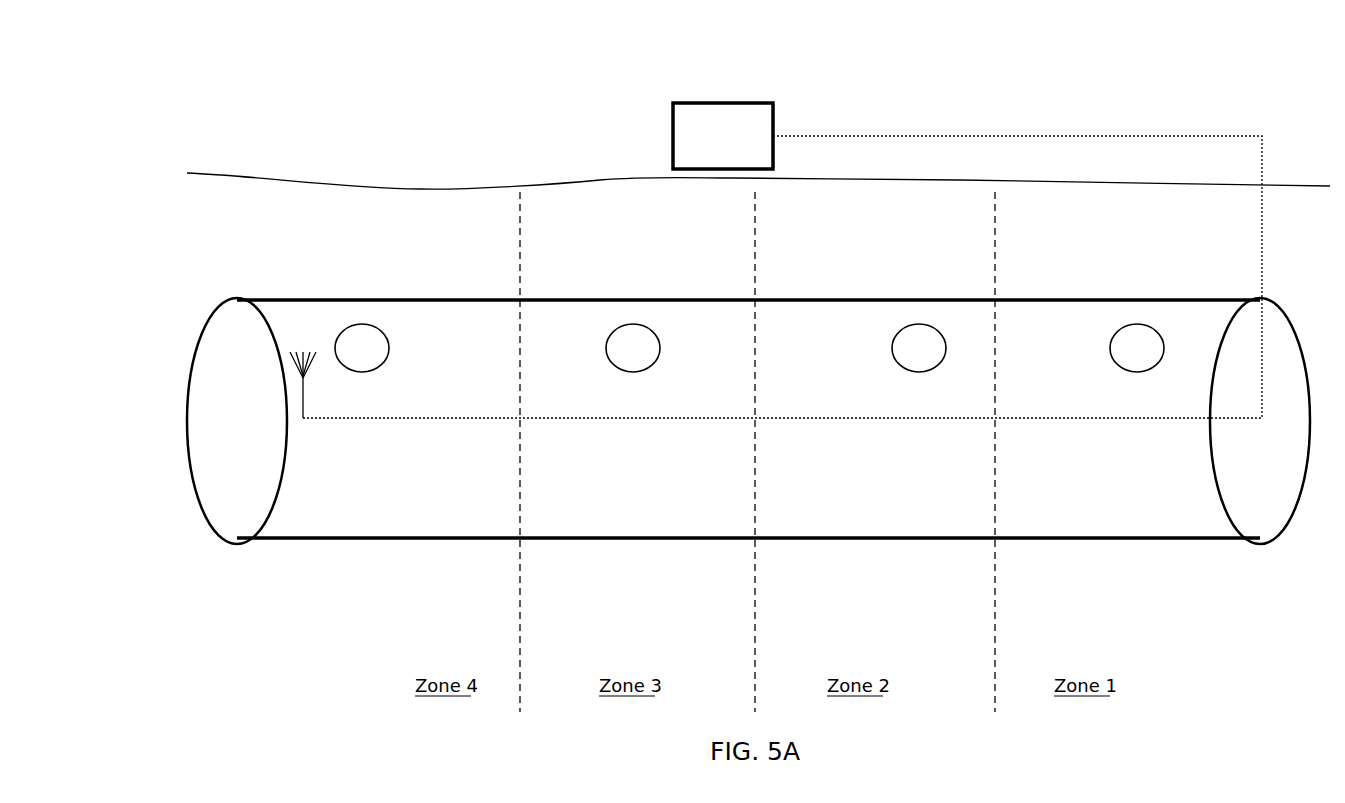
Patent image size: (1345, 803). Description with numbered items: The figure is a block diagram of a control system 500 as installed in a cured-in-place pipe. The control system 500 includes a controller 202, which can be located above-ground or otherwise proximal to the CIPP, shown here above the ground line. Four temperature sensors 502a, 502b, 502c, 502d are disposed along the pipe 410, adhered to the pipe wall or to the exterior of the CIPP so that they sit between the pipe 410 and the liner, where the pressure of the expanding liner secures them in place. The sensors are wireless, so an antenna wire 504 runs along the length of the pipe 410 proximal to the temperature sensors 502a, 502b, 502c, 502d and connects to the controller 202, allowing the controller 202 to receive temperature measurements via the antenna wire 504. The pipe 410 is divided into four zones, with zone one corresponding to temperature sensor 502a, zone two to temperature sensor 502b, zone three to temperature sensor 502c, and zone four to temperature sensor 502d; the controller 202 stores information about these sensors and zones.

The control system 500 is at (205, 108).
The controller 202 is at (740, 143).
The pipe 410 is at (326, 524).
The antenna wire 504 is at (463, 421).
The temperature sensor 502a is at (1137, 325).
The temperature sensor 502b is at (919, 325).
The temperature sensor 502c is at (633, 325).
The temperature sensor 502d is at (362, 325).